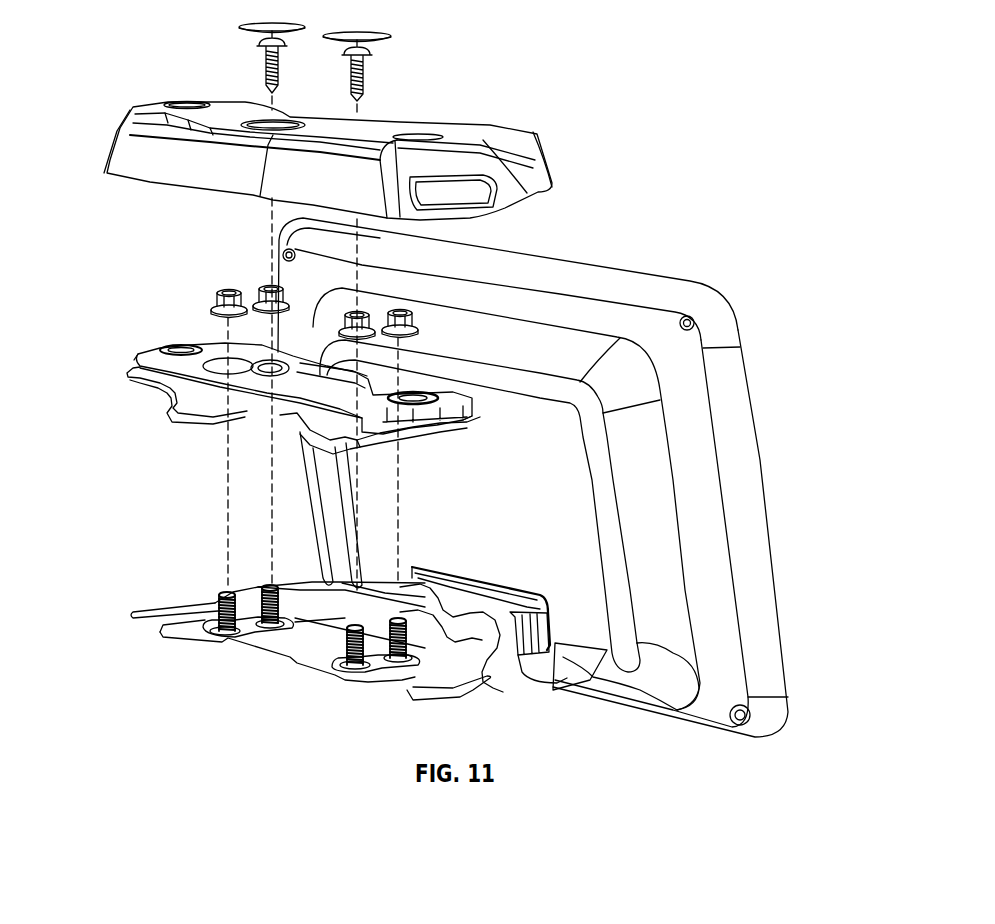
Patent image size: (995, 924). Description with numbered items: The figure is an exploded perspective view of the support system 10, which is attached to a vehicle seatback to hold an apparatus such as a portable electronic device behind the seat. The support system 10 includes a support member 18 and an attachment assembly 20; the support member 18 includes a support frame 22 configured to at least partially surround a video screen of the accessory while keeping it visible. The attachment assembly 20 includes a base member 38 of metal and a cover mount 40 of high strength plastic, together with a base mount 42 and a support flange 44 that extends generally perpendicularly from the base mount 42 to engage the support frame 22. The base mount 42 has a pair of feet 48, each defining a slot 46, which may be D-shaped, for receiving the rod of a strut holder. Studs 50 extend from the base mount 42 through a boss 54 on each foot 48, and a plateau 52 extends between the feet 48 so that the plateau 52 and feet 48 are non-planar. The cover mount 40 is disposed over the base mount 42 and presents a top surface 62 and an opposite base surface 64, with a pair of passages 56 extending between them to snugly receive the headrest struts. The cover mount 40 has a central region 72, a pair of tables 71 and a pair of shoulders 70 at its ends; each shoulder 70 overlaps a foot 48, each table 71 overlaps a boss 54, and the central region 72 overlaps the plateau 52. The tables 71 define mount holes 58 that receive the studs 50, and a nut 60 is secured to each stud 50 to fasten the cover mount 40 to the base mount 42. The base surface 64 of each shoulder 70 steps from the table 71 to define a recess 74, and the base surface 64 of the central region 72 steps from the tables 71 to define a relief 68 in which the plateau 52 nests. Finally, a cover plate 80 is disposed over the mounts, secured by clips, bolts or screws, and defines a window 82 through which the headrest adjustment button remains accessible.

The support system 10 is at (757, 112).
The support member 18 is at (718, 312).
The attachment assembly 20 is at (141, 331).
The support frame 22 is at (643, 283).
The base member 38 is at (438, 663).
The cover mount 40 is at (477, 425).
The base mount 42 is at (183, 642).
The support flange 44 is at (530, 603).
The slot 46 is at (148, 632).
The foot 48 is at (177, 613).
The stud 50 is at (270, 582).
The plateau 52 is at (313, 637).
The boss 54 is at (310, 627).
The passage 56 is at (170, 346).
The mount hole 58 is at (281, 362).
The nut 60 is at (267, 289).
The top surface 62 is at (200, 340).
The base surface 64 is at (153, 390).
The relief 68 is at (281, 428).
The shoulder 70 is at (140, 355).
The table 71 is at (178, 413).
The central region 72 is at (297, 412).
The recess 74 is at (130, 387).
The cover plate 80 is at (130, 118).
The window 82 is at (448, 193).